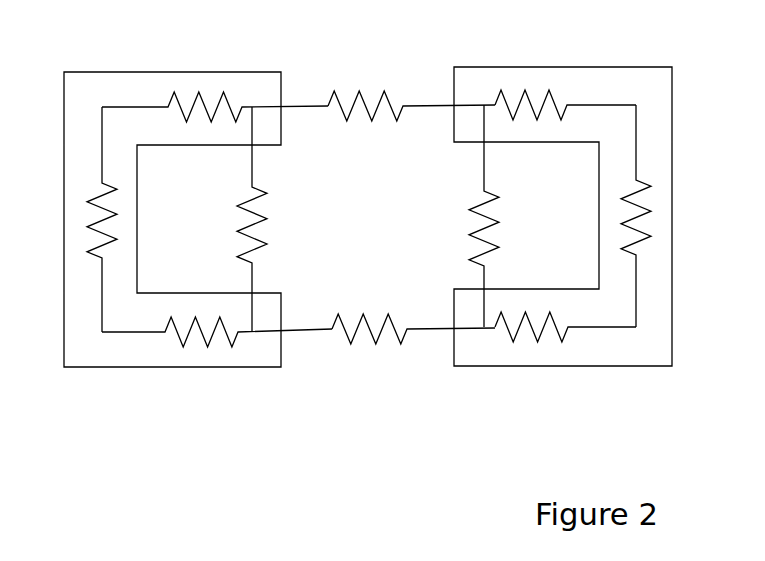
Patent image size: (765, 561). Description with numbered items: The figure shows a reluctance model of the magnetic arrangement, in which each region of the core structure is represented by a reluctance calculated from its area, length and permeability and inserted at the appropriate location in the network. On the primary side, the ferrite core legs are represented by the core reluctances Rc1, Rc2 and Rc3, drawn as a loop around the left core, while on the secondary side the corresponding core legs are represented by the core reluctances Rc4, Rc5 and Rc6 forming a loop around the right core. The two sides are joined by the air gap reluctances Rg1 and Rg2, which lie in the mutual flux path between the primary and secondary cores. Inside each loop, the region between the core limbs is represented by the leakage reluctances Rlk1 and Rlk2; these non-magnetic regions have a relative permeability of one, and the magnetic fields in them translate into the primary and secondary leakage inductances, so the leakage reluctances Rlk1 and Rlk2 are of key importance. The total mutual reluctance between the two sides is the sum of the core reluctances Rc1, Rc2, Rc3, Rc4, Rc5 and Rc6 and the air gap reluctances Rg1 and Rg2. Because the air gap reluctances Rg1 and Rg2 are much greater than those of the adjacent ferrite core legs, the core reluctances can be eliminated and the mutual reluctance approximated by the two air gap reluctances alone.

The core reluctance Rc1 is at (217, 360).
The core reluctance Rc2 is at (69, 219).
The core reluctance Rc3 is at (215, 78).
The core reluctance Rc4 is at (565, 76).
The core reluctance Rc5 is at (670, 216).
The core reluctance Rc6 is at (565, 357).
The air gap reluctance Rg1 is at (411, 89).
The air gap reluctance Rg2 is at (413, 351).
The leakage reluctance Rlk1 is at (228, 219).
The leakage reluctance Rlk2 is at (509, 216).